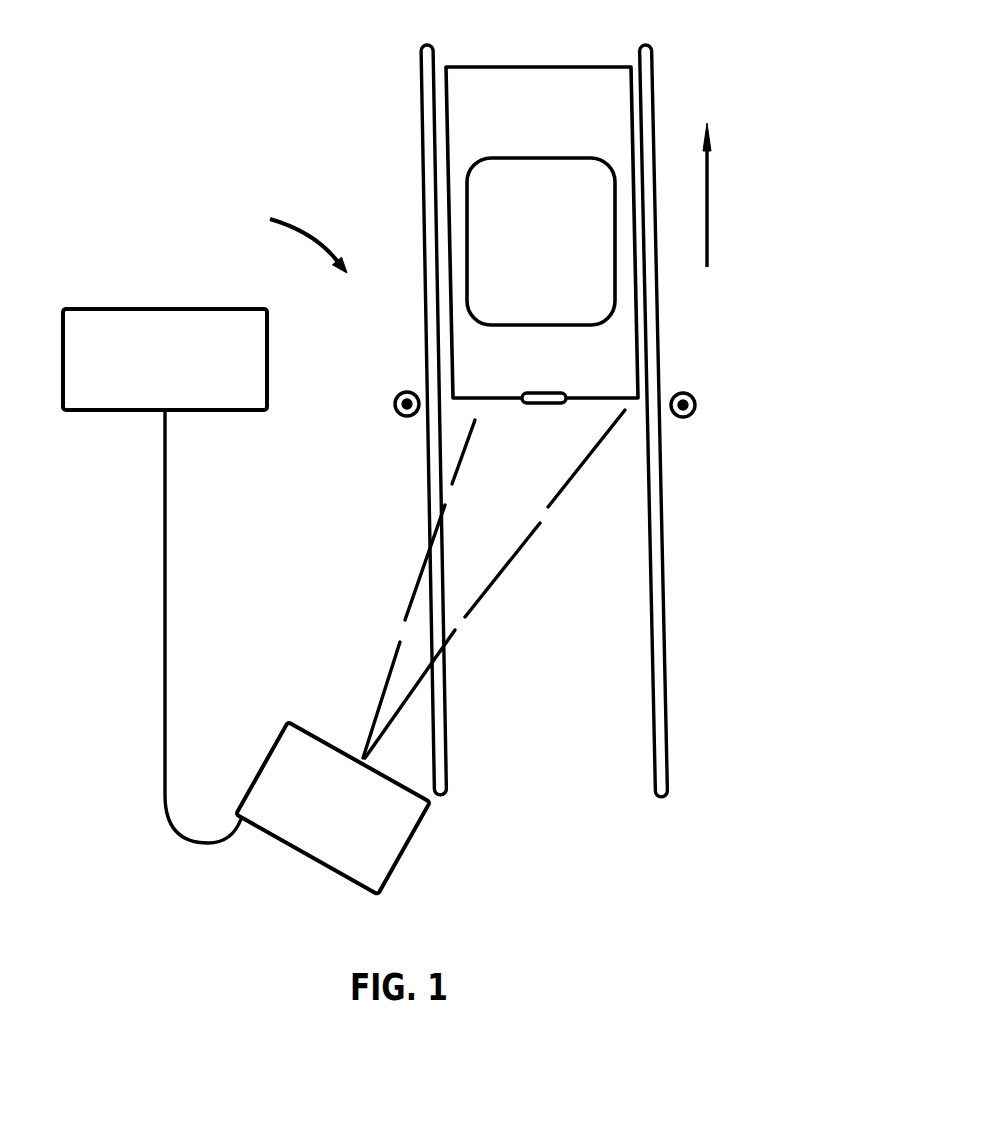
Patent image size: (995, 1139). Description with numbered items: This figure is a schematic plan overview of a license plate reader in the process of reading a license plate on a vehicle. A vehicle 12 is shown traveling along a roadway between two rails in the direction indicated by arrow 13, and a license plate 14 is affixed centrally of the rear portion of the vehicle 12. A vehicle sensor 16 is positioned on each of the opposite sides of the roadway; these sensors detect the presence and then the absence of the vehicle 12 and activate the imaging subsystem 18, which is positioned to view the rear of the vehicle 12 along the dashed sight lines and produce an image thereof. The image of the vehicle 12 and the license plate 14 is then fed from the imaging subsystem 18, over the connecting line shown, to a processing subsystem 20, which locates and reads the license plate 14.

The vehicle 12 is at (593, 100).
The arrow 13 is at (707, 197).
The license plate 14 is at (543, 393).
The vehicle sensor 16 is at (393, 411).
The imaging subsystem 18 is at (277, 840).
The processing subsystem 20 is at (188, 309).